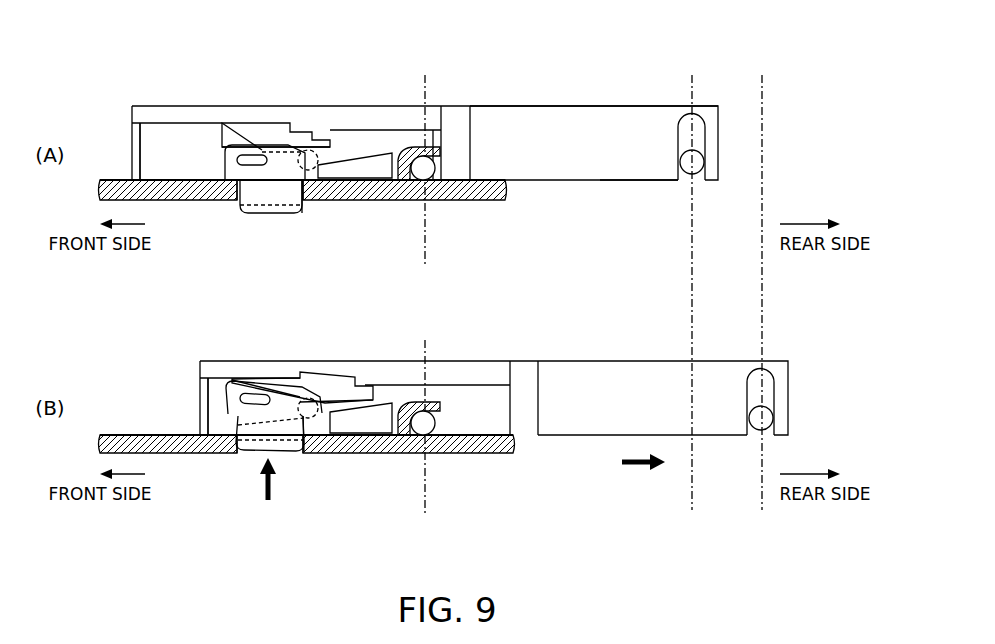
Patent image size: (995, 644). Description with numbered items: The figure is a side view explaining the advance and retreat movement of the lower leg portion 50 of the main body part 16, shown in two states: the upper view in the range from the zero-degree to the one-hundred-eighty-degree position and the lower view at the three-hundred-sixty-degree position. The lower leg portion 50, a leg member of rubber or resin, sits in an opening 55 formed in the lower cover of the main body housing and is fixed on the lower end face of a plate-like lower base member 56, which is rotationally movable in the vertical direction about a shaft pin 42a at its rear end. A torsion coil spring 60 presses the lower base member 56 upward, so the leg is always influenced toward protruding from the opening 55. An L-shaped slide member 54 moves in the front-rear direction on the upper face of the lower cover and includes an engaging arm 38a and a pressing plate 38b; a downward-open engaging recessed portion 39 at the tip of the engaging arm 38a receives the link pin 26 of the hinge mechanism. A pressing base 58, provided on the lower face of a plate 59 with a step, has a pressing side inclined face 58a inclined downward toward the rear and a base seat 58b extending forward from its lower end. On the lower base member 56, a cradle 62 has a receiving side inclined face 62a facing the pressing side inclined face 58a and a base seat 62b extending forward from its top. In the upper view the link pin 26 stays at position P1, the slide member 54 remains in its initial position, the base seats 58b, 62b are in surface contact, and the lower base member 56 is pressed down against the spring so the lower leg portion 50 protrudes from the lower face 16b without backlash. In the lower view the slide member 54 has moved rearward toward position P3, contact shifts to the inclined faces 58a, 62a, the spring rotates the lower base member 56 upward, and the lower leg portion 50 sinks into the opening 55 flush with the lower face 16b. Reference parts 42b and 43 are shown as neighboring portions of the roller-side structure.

The main body part 16 is at (538, 100).
The lower face of the main body part 16b is at (488, 202).
The link pin 26 is at (700, 172).
The engaging arm 38a is at (636, 182).
The pressing plate 38b is at (160, 106).
The engaging recessed portion 39 is at (686, 140).
The shaft pin 42a is at (408, 195).
The opening edge 42b is at (241, 207).
The roller holder 43 is at (432, 146).
The lower leg portion 50 is at (298, 205).
The slide member 54 is at (579, 123).
The opening 55 is at (237, 204).
The lower base member 56 is at (347, 150).
The pressing base 58 is at (282, 123).
The pressing side inclined face 58a is at (230, 122).
The base seat 58b is at (272, 200).
The plate 59 is at (152, 130).
The torsion coil spring 60 is at (311, 150).
The cradle 62 is at (277, 205).
The receiving side inclined face 62a is at (340, 192).
The base seat 62b is at (264, 142).
The position P1 is at (692, 305).
The position P3 is at (762, 305).